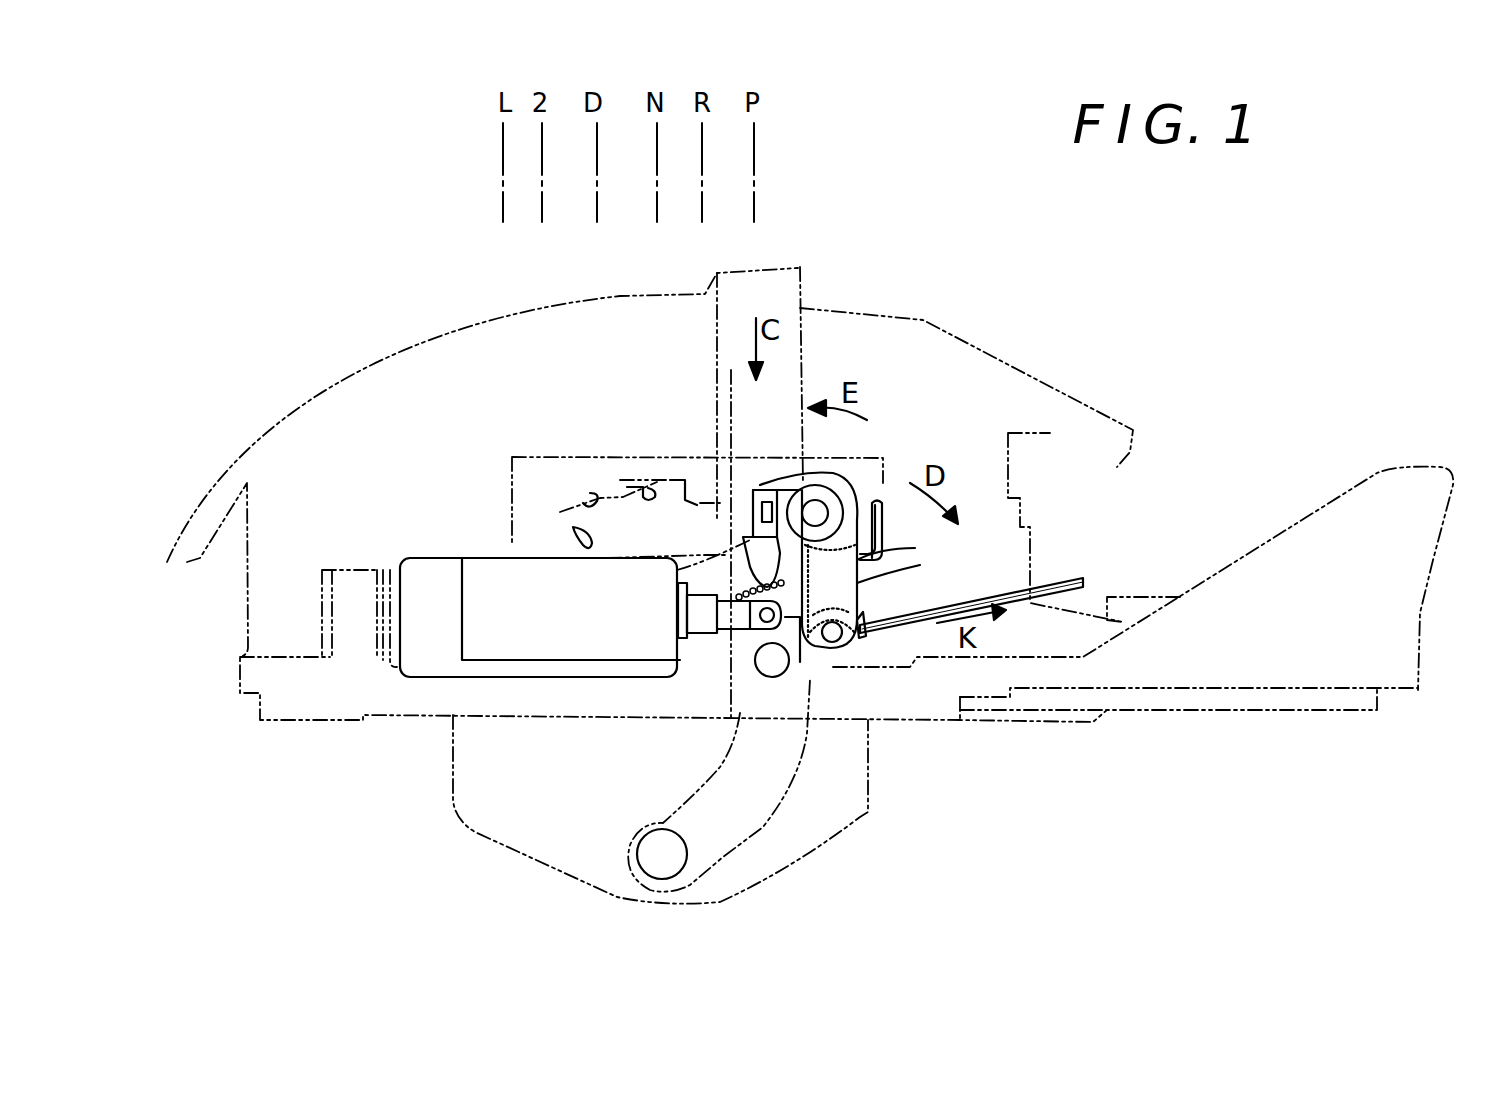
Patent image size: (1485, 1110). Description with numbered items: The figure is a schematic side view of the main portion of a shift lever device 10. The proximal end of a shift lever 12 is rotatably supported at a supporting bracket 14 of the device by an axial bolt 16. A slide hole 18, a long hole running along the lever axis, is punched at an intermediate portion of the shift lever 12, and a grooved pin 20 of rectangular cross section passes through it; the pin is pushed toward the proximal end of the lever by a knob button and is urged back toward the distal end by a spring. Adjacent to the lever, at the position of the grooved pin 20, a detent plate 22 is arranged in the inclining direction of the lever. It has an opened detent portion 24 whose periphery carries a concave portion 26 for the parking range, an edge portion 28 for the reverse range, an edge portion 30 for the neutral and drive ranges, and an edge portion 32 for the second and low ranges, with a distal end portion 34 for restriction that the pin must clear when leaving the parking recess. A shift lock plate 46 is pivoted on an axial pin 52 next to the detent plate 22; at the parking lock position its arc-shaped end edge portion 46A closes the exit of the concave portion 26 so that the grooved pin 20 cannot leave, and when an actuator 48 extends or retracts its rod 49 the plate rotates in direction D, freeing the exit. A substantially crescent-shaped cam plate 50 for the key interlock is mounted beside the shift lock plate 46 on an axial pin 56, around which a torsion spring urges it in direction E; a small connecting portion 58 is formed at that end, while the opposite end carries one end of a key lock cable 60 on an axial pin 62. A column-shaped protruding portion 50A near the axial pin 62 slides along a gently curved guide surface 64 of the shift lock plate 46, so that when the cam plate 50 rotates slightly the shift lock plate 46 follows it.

The shift lever device 10 is at (1040, 372).
The shift lever 12 is at (788, 298).
The supporting bracket 14 is at (885, 806).
The axial bolt 16 is at (694, 850).
The slide hole 18 is at (677, 568).
The grooved pin 20 is at (743, 507).
The detent plate 22 is at (520, 540).
The detent portion 24 is at (575, 527).
The concave portion for P range 26 is at (753, 488).
The edge portion for R range 28 is at (675, 505).
The edge portion for N and D ranges 30 is at (648, 498).
The edge portion for 2 and L ranges 32 is at (597, 500).
The distal end portion for restriction 34 is at (697, 507).
The shift lock plate 46 is at (742, 610).
The end edge portion 46A is at (747, 543).
The actuator 48 is at (490, 628).
The rod 49 is at (727, 617).
The cam plate 50 is at (858, 598).
The protruding portion 50A is at (880, 575).
The axial pin 52 is at (767, 680).
The axial pin 56 is at (825, 503).
The connecting portion 58 is at (765, 490).
The key lock cable 60 is at (1083, 582).
The axial pin 62 is at (835, 642).
The guide surface 64 is at (893, 530).